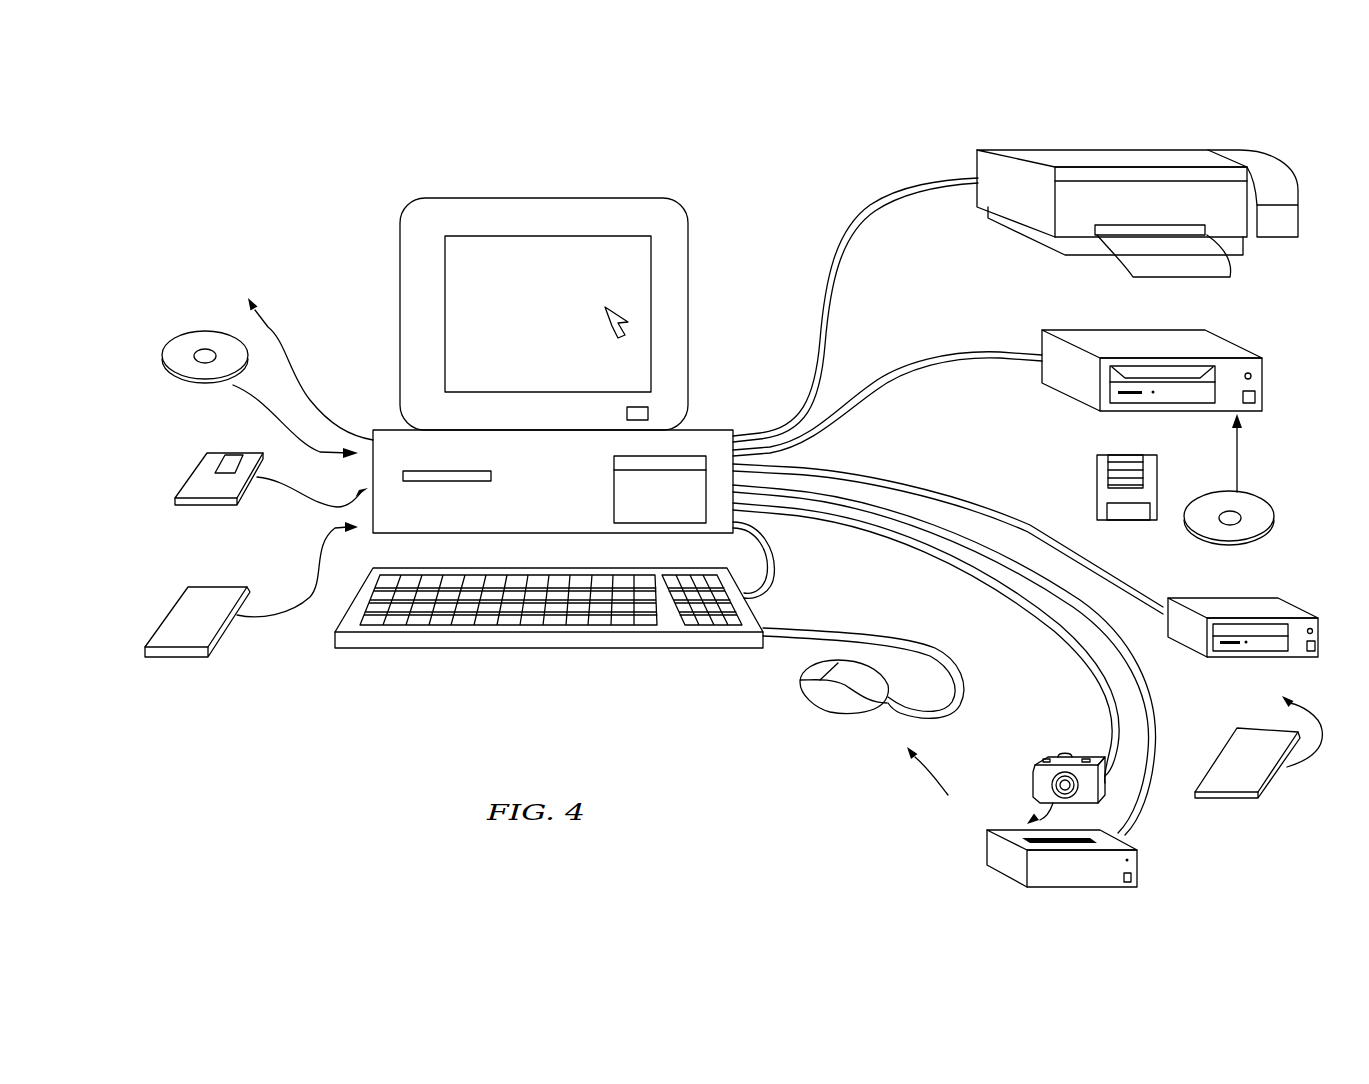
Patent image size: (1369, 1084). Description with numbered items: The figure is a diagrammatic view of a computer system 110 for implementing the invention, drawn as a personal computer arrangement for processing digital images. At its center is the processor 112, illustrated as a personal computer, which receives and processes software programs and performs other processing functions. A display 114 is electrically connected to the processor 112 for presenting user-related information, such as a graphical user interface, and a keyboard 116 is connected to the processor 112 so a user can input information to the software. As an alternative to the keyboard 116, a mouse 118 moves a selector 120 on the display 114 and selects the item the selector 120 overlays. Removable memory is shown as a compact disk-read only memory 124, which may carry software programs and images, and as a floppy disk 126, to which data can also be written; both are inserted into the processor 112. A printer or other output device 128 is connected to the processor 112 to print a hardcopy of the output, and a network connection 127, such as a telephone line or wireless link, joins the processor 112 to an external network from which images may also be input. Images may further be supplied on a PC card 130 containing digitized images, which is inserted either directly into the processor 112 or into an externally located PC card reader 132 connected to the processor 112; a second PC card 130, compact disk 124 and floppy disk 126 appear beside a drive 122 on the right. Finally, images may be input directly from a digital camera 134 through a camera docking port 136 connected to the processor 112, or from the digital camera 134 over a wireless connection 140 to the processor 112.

The computer system 110 is at (276, 205).
The processor 112 is at (375, 432).
The display 114 is at (527, 198).
The keyboard 116 is at (483, 645).
The mouse 118 is at (812, 690).
The selector 120 is at (630, 316).
The optical disc drive 122 is at (1090, 333).
The compact disk-read only memory (CD-ROM) 124 is at (181, 336).
The floppy disk 126 is at (203, 466).
The network connection 127 is at (265, 326).
The printer 128 is at (1093, 150).
The PC card 130 is at (186, 598).
The PC card reader 132 is at (1262, 655).
The digital camera 134 is at (1068, 755).
The camera docking port 136 is at (1006, 868).
The wireless connection 140 is at (1032, 782).